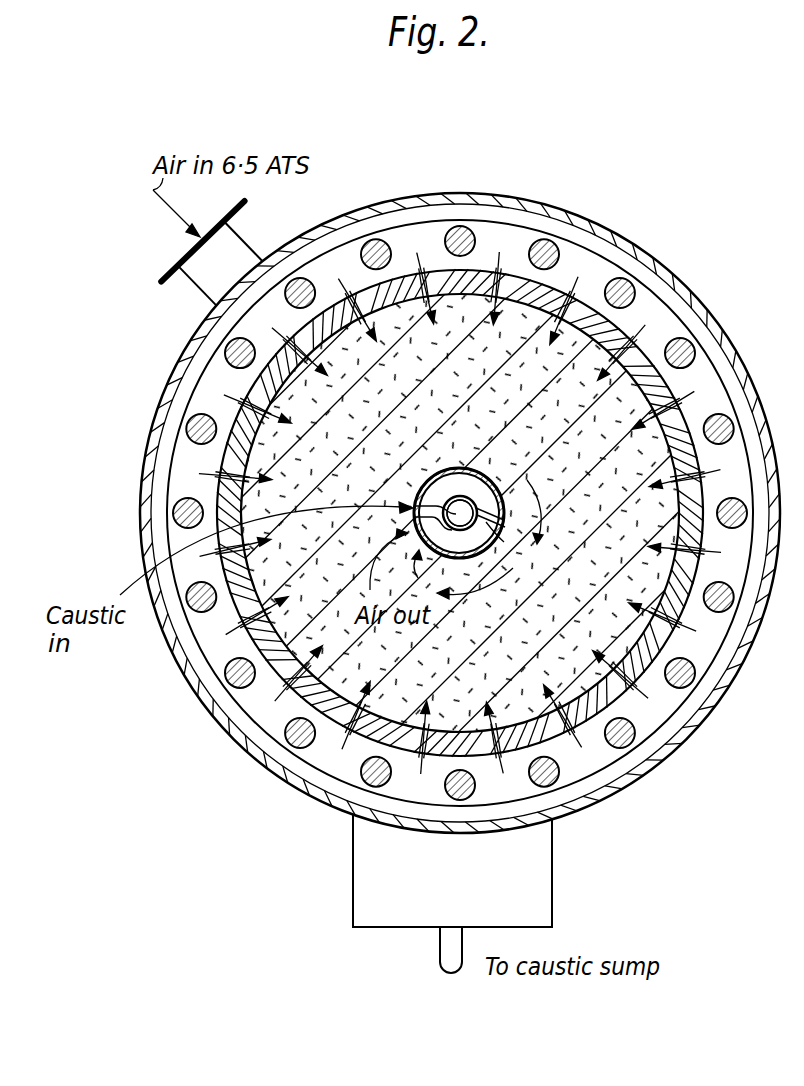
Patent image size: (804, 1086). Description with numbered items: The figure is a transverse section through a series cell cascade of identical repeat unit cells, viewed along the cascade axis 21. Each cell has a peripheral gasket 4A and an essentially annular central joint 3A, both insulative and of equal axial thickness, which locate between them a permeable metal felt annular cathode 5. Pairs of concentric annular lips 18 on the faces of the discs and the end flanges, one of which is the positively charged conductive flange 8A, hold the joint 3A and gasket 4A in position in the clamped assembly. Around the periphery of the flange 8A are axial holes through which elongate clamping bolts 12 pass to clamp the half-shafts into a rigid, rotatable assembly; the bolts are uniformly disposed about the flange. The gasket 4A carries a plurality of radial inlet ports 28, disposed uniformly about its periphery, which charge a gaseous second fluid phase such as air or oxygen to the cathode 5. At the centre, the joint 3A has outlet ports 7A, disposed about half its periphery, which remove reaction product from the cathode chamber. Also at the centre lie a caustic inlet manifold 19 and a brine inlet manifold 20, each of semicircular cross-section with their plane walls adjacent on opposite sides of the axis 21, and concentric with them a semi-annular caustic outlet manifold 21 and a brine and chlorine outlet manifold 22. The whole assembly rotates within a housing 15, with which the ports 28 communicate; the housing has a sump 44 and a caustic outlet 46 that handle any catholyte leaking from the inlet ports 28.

The clamping bolts 12 is at (393, 239).
The conductive flange 8A is at (585, 257).
The housing 15 is at (667, 273).
The concentric annular lips 18 is at (648, 352).
The peripheral gasket 4A is at (655, 427).
The annular cathode 5 is at (667, 513).
The central joint 3A is at (421, 478).
The caustic inlet manifold 19 is at (440, 478).
The brine inlet manifold 20 is at (430, 532).
The brine and chlorine outlet manifold 22 is at (487, 507).
The outlet ports 7A is at (504, 543).
The caustic outlet manifold 21 is at (471, 547).
The radial inlet ports 28 is at (255, 690).
The sump 44 is at (353, 870).
The caustic outlet 46 is at (484, 957).